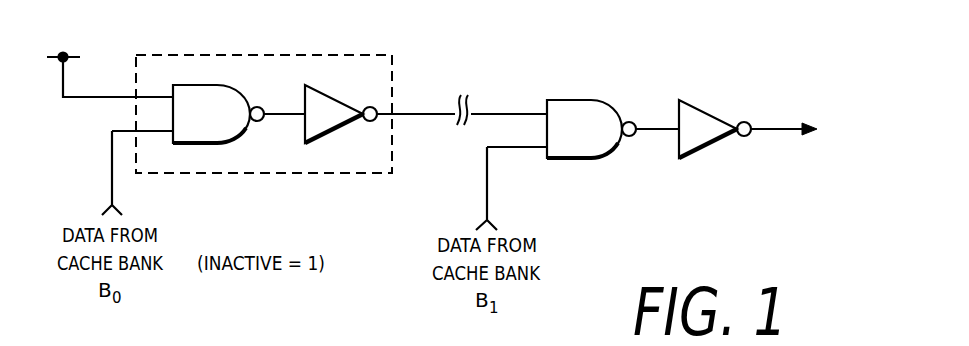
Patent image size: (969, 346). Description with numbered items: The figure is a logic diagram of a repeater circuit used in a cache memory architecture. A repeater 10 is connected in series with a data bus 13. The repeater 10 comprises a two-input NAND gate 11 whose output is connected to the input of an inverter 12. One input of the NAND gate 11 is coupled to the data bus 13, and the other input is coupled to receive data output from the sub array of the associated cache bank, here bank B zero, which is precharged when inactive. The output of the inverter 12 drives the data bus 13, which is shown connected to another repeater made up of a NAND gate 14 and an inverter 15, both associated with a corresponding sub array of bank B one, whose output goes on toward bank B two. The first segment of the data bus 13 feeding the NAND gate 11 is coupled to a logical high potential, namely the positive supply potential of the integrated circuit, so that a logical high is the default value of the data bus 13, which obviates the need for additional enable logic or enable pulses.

The repeater 10 is at (243, 55).
The NAND gate 11 is at (213, 123).
The inverter 12 is at (333, 123).
The data bus 13 is at (77, 100).
The NAND gate 14 is at (585, 138).
The inverter 15 is at (704, 138).